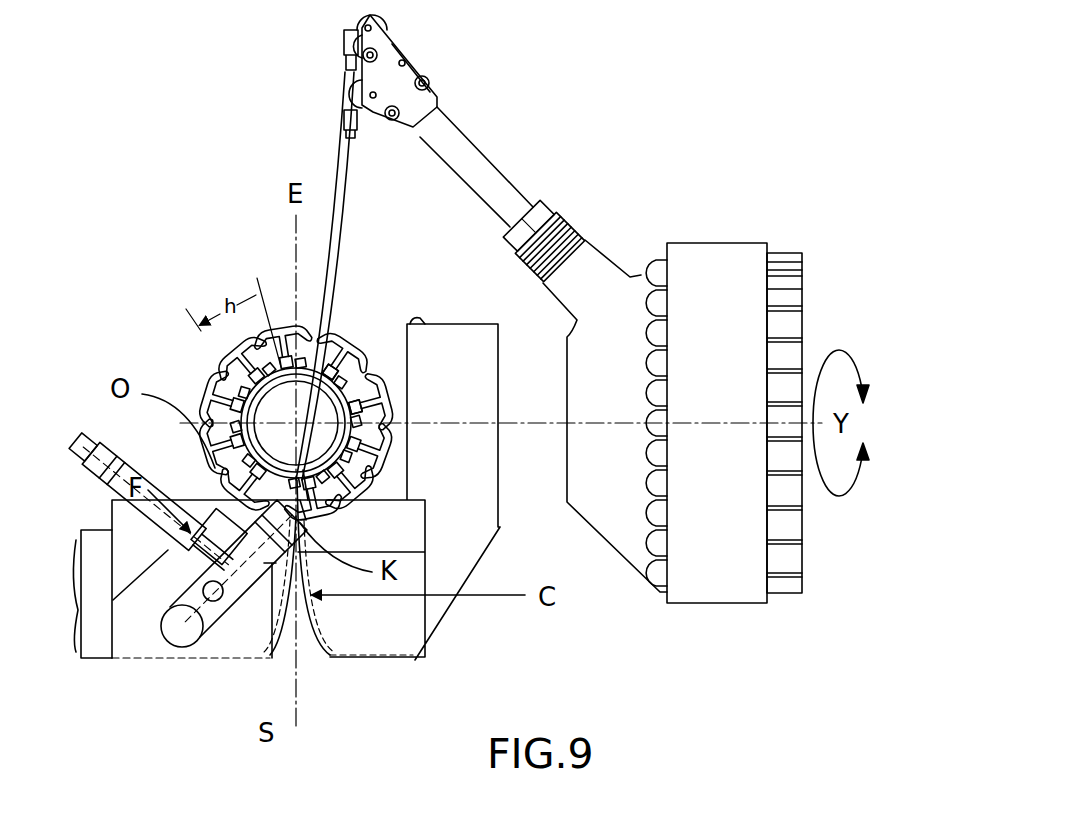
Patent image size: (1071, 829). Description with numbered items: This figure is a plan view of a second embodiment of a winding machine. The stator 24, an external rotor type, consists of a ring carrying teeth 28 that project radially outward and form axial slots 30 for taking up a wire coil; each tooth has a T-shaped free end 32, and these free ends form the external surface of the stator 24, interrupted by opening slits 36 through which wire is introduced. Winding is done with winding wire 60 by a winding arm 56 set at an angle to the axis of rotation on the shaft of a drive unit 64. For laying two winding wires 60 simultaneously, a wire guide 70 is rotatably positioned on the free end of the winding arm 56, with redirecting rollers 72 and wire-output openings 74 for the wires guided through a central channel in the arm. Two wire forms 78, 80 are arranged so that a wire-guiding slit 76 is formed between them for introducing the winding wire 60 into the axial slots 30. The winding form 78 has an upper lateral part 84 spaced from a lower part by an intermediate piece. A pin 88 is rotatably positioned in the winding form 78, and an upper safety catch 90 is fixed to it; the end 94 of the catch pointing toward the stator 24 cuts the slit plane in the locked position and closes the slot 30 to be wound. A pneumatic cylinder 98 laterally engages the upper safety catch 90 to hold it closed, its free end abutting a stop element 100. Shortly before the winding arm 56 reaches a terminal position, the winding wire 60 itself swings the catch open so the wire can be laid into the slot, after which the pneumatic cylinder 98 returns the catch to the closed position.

The stator 24 is at (380, 328).
The teeth 28 is at (232, 400).
The axial slots 30 is at (240, 377).
The free end 32 is at (338, 330).
The opening slits 36 is at (355, 335).
The winding arm 56 is at (500, 150).
The winding wire 60 is at (330, 140).
The drive unit 64 is at (725, 243).
The wire guide 70 is at (400, 42).
The redirecting rollers 72 is at (356, 18).
The wire-output openings 74 is at (346, 100).
The wire-guiding slit 76 is at (338, 591).
The winding form 78 is at (135, 660).
The wire form 80 is at (428, 625).
The upper lateral part 84 is at (245, 633).
The pin 88 is at (167, 582).
The upper safety catch 90 is at (215, 645).
The end 94 is at (310, 523).
The pneumatic cylinder 98 is at (80, 440).
The stop element 100 is at (202, 598).